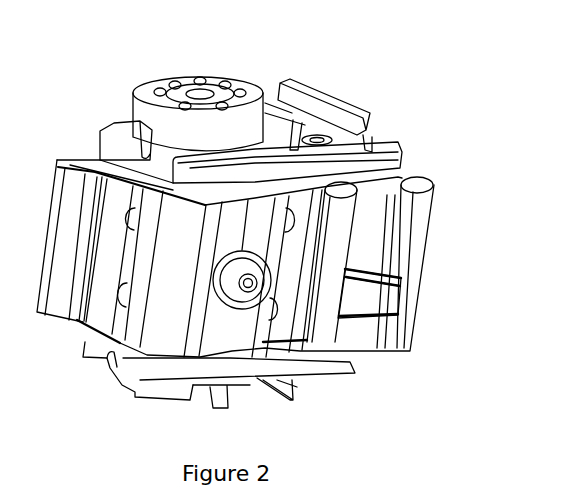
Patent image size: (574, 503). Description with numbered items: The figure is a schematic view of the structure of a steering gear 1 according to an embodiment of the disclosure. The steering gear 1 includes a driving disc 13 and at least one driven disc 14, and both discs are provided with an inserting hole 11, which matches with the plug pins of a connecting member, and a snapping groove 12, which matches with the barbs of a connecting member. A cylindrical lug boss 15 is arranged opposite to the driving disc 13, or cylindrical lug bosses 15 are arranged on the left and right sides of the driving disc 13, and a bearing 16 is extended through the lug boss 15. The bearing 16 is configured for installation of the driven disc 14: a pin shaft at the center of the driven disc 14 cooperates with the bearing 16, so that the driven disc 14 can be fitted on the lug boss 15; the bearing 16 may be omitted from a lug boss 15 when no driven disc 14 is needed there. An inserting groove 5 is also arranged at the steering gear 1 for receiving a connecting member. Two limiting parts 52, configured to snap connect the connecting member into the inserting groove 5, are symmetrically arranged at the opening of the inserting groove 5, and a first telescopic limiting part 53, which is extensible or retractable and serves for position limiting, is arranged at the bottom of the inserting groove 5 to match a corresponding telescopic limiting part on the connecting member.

The steering gear 1 is at (137, 248).
The inserting groove 5 is at (357, 143).
The inserting hole 11 is at (207, 85).
The snapping groove 12 is at (175, 83).
The driving disc 13 is at (160, 132).
The driven disc 14 is at (153, 397).
The cylindrical lug boss 15 is at (257, 253).
The bearing 16 is at (253, 288).
The limiting part 52 is at (313, 97).
The first telescopic limiting part 53 is at (320, 142).